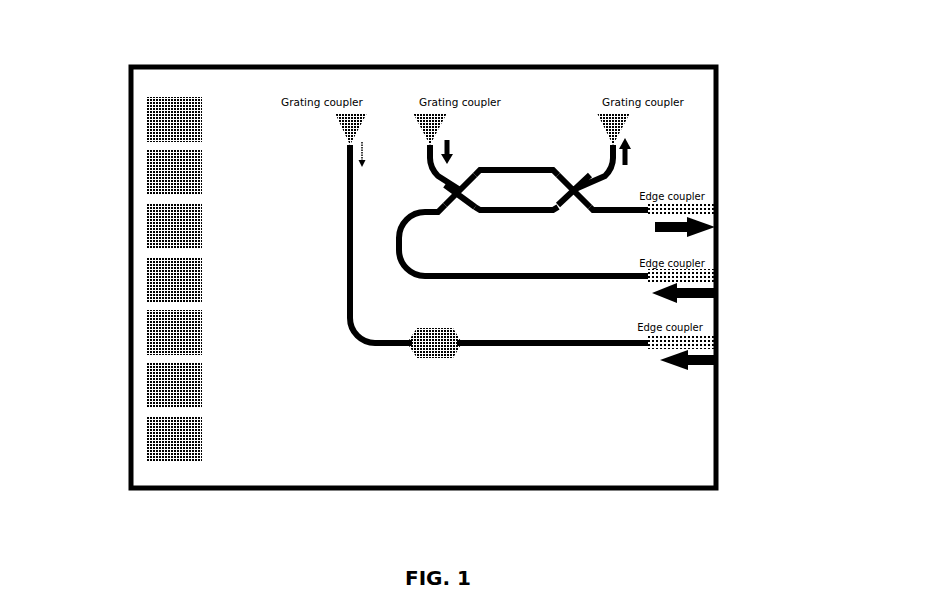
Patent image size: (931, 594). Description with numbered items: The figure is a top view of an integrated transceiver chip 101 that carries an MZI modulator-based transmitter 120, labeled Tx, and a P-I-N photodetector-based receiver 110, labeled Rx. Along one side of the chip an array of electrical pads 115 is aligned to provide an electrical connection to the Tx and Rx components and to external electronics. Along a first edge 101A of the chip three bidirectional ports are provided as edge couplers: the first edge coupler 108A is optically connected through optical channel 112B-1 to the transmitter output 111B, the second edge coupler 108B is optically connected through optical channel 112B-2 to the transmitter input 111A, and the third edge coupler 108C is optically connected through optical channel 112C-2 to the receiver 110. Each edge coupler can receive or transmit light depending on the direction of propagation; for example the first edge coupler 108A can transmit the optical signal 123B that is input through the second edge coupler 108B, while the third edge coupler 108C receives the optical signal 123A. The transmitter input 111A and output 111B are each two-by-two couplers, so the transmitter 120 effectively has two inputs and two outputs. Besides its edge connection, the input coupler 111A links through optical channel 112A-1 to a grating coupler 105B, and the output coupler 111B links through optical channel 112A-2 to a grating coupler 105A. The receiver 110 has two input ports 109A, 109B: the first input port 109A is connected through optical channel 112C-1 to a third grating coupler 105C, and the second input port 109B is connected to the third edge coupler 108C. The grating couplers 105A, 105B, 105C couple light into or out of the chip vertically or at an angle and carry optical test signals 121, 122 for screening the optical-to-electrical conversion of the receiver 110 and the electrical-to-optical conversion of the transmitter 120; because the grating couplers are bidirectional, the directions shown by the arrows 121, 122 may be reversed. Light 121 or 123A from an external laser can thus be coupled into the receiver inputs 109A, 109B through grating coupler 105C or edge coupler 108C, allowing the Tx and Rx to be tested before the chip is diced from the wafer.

The integrated transceiver chip 101 is at (423, 277).
The first edge 101A is at (738, 506).
The grating coupler 105A is at (600, 119).
The grating coupler 105B is at (417, 115).
The grating coupler 105C is at (342, 127).
The first edge coupler 108A is at (718, 207).
The second edge coupler 108B is at (718, 277).
The third edge coupler 108C is at (717, 343).
The receiver input port 109A is at (407, 345).
The receiver input port 109B is at (462, 345).
The receiver 110 is at (423, 358).
The transmitter input 111A is at (462, 180).
The transmitter output 111B is at (573, 183).
The optical channel 112A-1 is at (440, 177).
The optical channel 112A-2 is at (607, 173).
The optical channel 112B-1 is at (617, 213).
The optical channel 112B-2 is at (525, 280).
The optical channel 112C-1 is at (345, 277).
The optical channel 112C-2 is at (557, 348).
The array of electrical pads 115 is at (167, 122).
The transmitter 120 is at (467, 217).
The optical signal 121 is at (368, 165).
The optical signal 122 is at (452, 138).
The optical signal 123A is at (673, 370).
The optical signal 123B is at (718, 227).